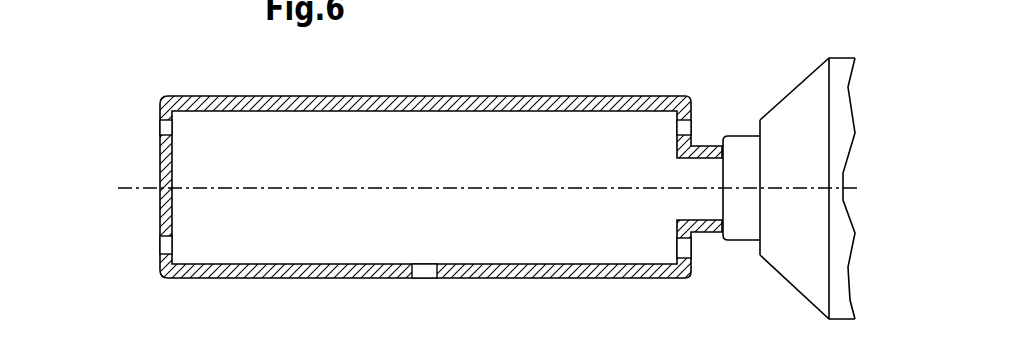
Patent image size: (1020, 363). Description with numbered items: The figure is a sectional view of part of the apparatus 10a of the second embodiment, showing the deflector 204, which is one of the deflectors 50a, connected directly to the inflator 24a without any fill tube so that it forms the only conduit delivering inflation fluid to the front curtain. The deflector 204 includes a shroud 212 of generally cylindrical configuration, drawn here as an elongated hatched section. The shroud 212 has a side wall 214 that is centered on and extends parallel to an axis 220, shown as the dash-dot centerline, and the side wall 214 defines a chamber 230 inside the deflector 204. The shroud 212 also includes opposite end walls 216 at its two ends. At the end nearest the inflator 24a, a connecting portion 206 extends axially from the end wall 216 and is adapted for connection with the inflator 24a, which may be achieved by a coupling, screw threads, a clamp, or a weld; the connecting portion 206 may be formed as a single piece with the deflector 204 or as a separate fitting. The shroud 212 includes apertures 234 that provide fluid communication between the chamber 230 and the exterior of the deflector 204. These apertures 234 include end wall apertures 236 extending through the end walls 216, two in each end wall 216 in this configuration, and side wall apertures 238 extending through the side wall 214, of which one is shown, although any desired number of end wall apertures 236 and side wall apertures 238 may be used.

The apparatus 10a is at (214, 58).
The deflector 50a is at (224, 294).
The deflector 204 is at (436, 189).
The shroud 212 is at (532, 100).
The side wall 214 is at (362, 278).
The end walls 216 is at (160, 162).
The connecting portion 206 is at (709, 148).
The axis 220 is at (128, 192).
The chamber 230 is at (350, 147).
The apertures 234 is at (436, 189).
The end wall apertures 236 is at (160, 129).
The side wall apertures 238 is at (425, 277).
The inflator 24a is at (838, 66).